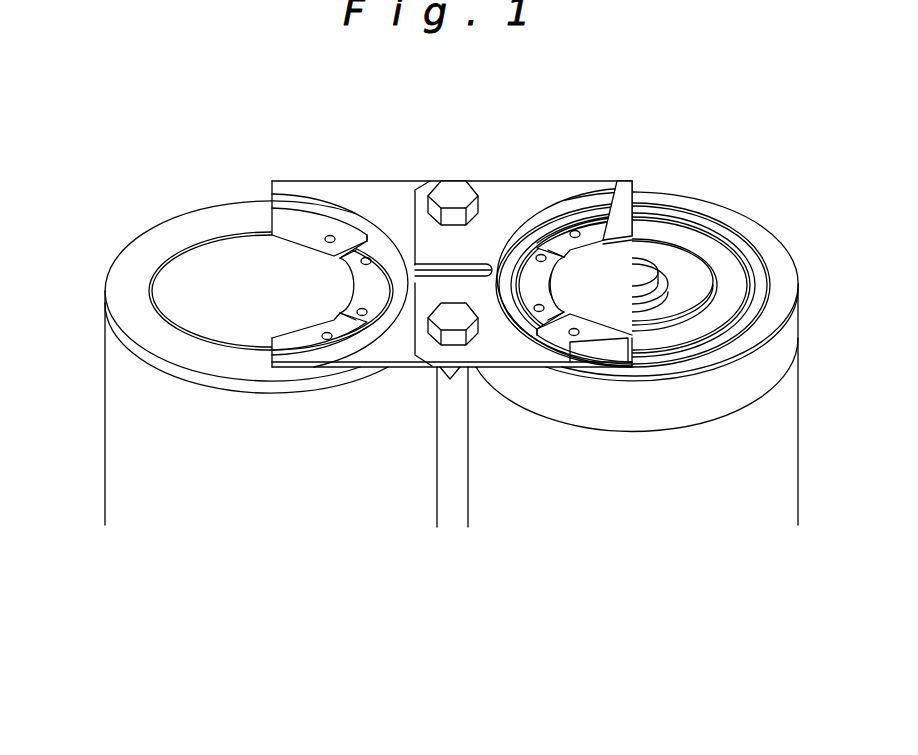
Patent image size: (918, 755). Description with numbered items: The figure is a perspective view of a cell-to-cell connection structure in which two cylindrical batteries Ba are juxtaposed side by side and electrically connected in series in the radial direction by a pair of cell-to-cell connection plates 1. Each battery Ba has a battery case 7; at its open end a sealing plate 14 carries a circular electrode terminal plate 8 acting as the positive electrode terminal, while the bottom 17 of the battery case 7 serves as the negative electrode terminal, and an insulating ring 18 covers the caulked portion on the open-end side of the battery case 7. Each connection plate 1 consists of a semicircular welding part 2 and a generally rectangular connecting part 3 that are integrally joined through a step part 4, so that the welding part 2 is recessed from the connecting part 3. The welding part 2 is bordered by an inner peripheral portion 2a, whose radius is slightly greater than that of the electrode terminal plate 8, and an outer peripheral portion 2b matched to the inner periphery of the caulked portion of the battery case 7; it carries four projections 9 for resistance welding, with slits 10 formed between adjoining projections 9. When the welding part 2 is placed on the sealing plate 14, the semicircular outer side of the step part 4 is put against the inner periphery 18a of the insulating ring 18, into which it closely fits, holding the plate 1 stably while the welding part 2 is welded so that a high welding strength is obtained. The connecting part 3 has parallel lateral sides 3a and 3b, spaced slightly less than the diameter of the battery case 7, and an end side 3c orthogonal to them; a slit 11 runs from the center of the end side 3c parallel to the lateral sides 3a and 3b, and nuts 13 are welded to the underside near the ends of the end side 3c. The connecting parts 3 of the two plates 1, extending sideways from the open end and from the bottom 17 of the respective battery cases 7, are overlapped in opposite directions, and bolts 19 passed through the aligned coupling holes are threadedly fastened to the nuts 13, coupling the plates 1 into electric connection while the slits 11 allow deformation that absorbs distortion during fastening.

The cell-to-cell connection plate 1 is at (441, 295).
The welding part 2 is at (439, 269).
The inner peripheral portion 2a is at (305, 248).
The outer peripheral portion 2b is at (312, 226).
The connecting part 3 is at (386, 195).
The lateral side 3a is at (305, 181).
The lateral side 3b is at (600, 190).
The end side 3c is at (412, 195).
The step part 4 is at (348, 238).
The battery case 7 is at (122, 418).
The electrode terminal plate 8 is at (668, 258).
The projection 9 is at (325, 243).
The slit 10 is at (355, 240).
The slit 11 is at (490, 273).
The nut 13 is at (449, 375).
The sealing plate 14 is at (708, 368).
The bottom 17 is at (188, 297).
The insulating ring 18 is at (750, 375).
The inner periphery 18a is at (732, 233).
The bolt 19 is at (458, 192).
The battery Ba is at (176, 217).